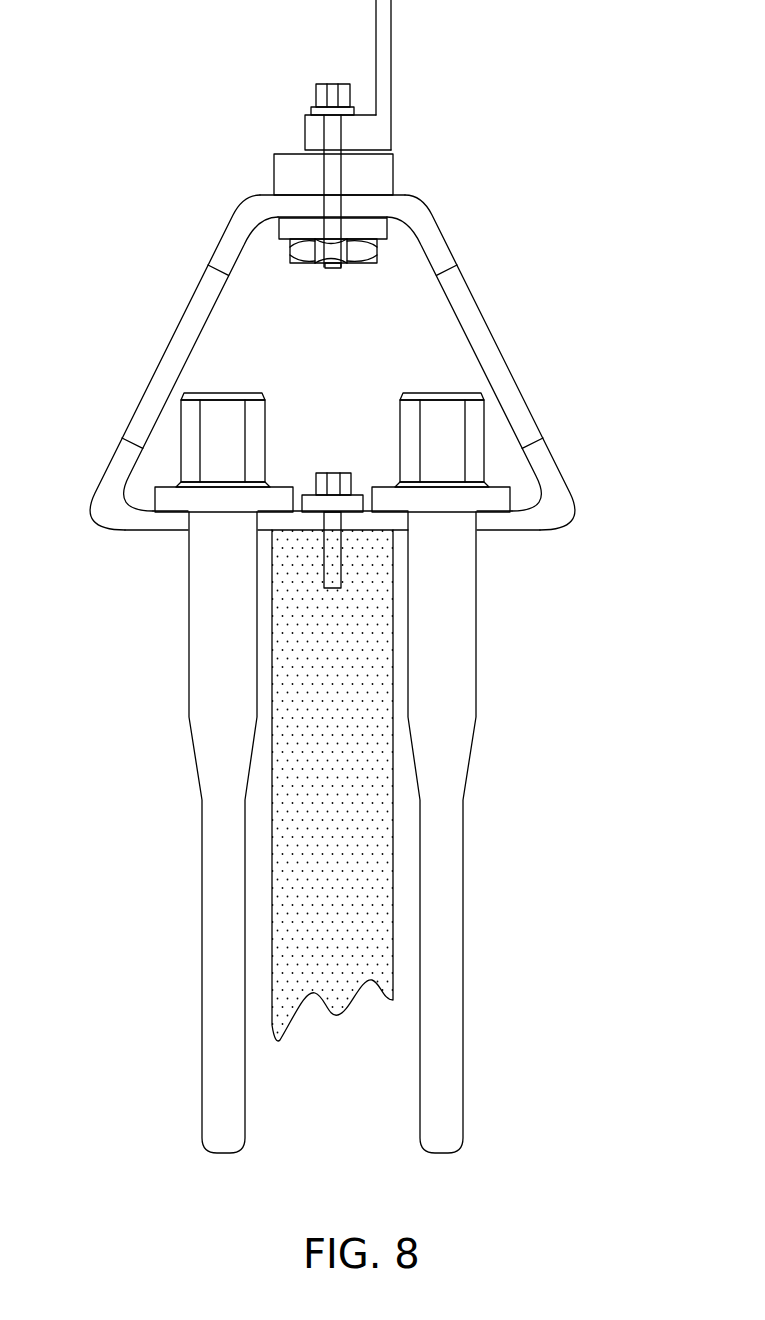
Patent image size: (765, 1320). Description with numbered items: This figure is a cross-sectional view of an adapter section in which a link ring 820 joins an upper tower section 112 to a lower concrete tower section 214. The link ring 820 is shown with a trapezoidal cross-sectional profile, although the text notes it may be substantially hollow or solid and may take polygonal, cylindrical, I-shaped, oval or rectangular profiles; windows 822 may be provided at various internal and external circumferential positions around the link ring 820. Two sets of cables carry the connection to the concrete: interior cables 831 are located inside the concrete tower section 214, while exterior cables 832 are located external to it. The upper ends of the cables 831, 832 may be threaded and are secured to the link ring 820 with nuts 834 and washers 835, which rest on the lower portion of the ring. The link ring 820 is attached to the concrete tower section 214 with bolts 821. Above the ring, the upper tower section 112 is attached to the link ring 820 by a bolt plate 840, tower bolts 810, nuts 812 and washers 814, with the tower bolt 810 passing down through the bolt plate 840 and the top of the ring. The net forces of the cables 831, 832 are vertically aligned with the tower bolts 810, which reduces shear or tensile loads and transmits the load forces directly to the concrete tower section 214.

The upper tower section 112 is at (391, 31).
The nuts 812 is at (350, 98).
The washers 814 is at (315, 108).
The tower bolts 810 is at (333, 180).
The bolt plate 840 is at (287, 167).
The link ring 820 is at (228, 230).
The windows 822 is at (193, 298).
The nuts 834 is at (190, 432).
The washers 835 is at (182, 498).
The bolts 821 is at (333, 537).
The interior cables 831 is at (203, 782).
The exterior cables 832 is at (455, 783).
The concrete tower section 214 is at (377, 922).